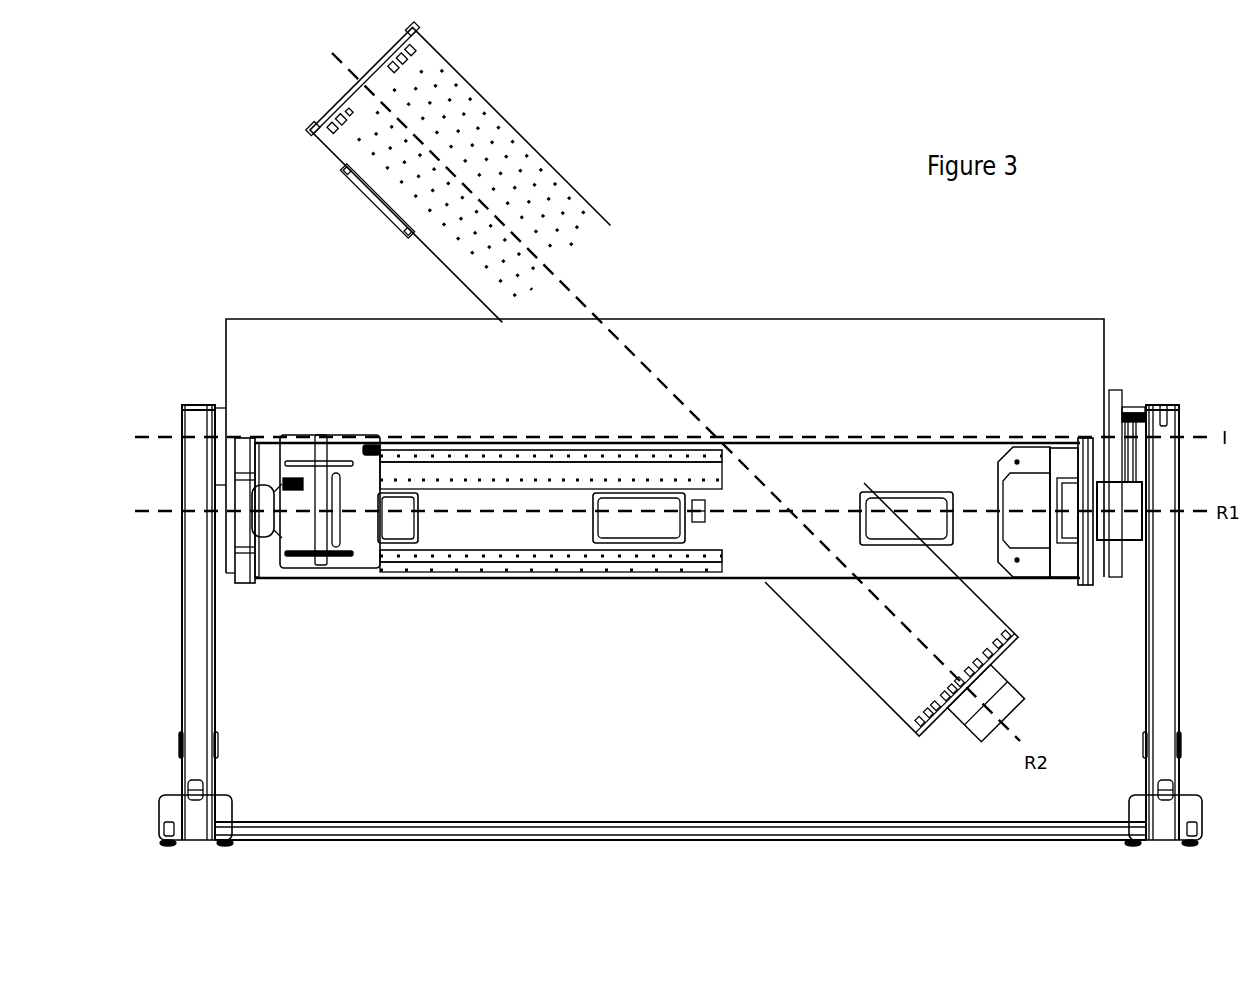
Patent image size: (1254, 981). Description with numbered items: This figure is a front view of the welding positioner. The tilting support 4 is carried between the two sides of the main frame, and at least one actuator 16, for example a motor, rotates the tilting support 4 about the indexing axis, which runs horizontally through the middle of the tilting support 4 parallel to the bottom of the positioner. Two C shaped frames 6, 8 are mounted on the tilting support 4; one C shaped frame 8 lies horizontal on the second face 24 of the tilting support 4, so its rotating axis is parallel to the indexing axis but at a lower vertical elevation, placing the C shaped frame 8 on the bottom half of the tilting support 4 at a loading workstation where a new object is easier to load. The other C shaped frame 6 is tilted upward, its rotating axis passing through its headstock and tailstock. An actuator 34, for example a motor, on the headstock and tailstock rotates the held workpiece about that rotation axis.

The tilting support 4 is at (337, 342).
The C shaped frame 6 is at (615, 237).
The C shaped frame 8 is at (736, 585).
The actuator 16 is at (1130, 412).
The second face 24 is at (766, 359).
The actuator 34 is at (1118, 545).